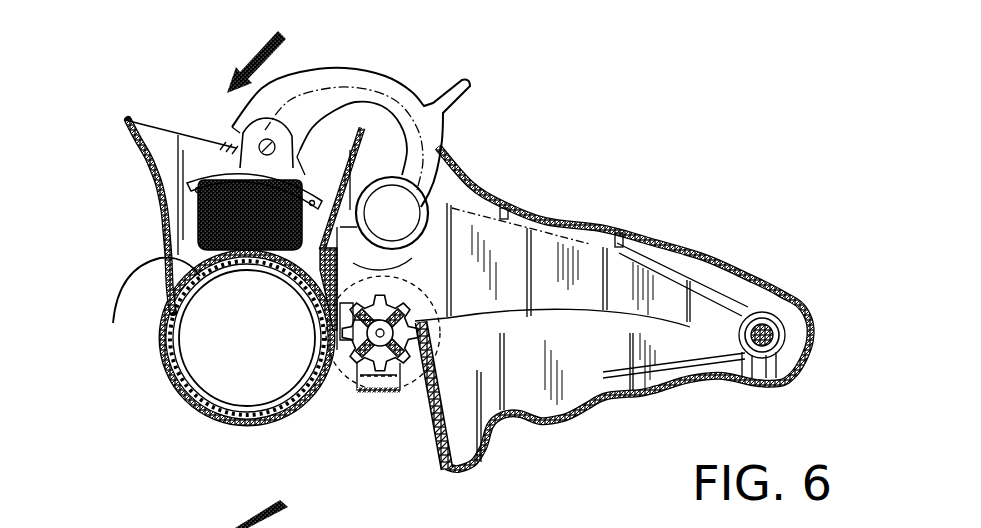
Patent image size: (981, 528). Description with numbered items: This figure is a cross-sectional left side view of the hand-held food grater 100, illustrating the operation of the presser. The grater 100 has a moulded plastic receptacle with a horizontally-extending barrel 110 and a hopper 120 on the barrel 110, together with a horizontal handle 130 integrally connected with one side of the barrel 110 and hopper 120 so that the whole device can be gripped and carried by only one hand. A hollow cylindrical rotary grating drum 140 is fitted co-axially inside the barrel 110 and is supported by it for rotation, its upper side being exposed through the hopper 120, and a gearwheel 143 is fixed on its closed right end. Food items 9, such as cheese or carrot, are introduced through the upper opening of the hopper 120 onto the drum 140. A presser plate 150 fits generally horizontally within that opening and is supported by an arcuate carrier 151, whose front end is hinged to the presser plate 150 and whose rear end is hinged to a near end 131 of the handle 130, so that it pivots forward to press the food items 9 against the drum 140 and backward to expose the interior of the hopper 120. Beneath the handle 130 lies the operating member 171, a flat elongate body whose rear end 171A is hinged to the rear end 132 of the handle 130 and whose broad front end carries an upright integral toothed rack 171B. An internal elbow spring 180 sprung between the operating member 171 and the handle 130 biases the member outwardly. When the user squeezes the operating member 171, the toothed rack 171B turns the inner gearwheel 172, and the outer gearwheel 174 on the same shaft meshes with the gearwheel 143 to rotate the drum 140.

The food grater 100 is at (632, 148).
The barrel 110 is at (167, 380).
The hopper 120 is at (157, 178).
The handle 130 is at (647, 233).
The near end of the handle 131 is at (447, 190).
The rear end of the handle 132 is at (807, 307).
The rotary grating drum 140 is at (143, 304).
The gearwheel 143 is at (208, 405).
The presser plate 150 is at (210, 175).
The arcuate carrier 151 is at (352, 82).
The operating member 171 is at (577, 423).
The rear end of the operating member 171A is at (807, 360).
The toothed rack 171B is at (440, 478).
The inner gearwheel 172 is at (357, 360).
The outer gearwheel 174 is at (412, 288).
The elbow spring 180 is at (705, 277).
The food items 9 is at (222, 222).